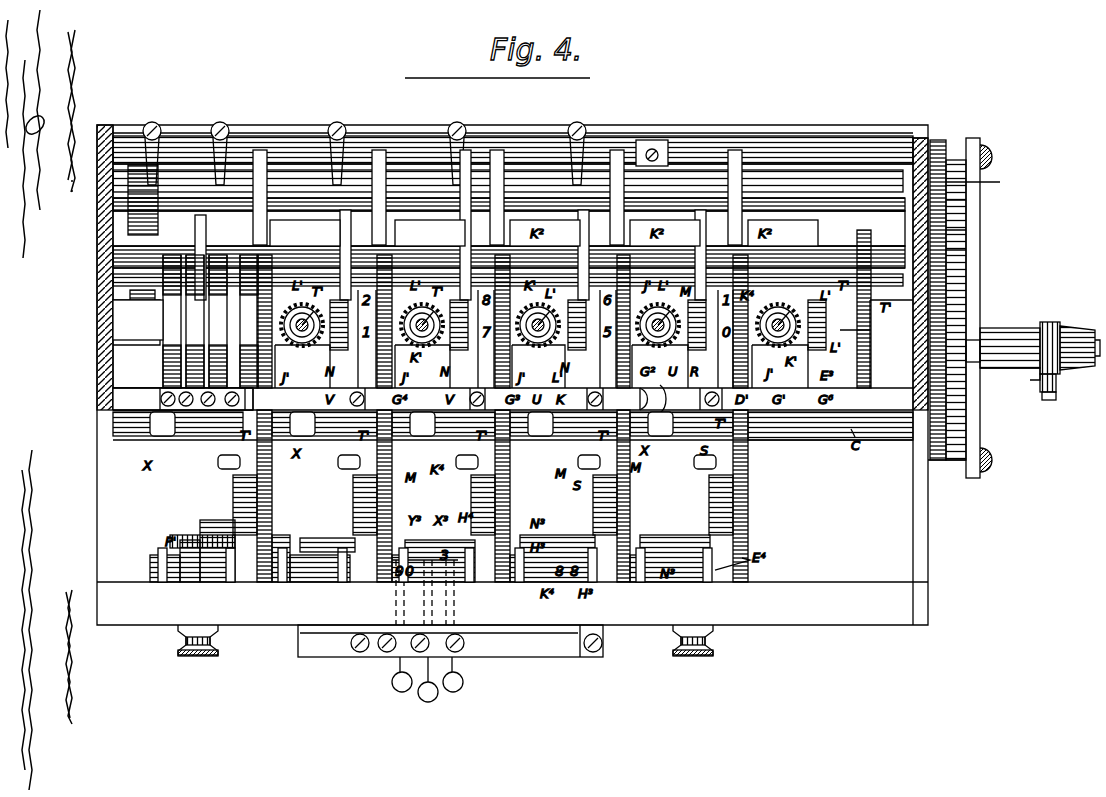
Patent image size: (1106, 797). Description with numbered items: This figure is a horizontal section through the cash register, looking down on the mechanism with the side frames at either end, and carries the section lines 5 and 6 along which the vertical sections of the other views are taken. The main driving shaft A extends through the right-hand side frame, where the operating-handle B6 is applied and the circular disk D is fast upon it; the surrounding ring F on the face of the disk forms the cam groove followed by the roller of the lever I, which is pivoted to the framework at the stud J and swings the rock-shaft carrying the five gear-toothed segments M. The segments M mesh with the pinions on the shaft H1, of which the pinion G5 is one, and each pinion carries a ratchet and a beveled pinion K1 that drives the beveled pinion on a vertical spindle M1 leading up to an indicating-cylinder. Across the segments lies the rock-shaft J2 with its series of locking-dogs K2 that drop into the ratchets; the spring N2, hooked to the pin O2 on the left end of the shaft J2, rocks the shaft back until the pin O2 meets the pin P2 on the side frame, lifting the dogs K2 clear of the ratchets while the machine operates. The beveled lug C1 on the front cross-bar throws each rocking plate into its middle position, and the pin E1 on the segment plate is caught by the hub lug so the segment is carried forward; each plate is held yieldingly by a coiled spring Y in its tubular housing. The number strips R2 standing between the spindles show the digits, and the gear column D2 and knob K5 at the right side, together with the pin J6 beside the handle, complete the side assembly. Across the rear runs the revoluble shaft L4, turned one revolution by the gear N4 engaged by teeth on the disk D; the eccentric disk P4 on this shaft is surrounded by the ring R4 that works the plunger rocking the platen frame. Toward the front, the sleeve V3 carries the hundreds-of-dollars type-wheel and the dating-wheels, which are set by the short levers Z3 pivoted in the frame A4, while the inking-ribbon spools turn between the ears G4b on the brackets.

The section line 5- 5 is at (112, 690).
The section line 6- 6 is at (800, 680).
The spring N2 is at (140, 135).
The pin P2 is at (113, 243).
The pin or screw O2 is at (113, 270).
The shaft H1 is at (139, 342).
The locking-dogs K2 is at (305, 233).
The ring R4 is at (430, 233).
The disk P4 is at (440, 191).
The revoluble shaft L4 is at (740, 198).
The rock-shaft J2 is at (851, 248).
The number strip R2 is at (210, 321).
The beveled pinion K1 is at (302, 336).
The pinion G5 is at (200, 399).
The vertical spindle M1 is at (272, 476).
The pin E1 is at (218, 460).
The beveled lug C1 is at (163, 579).
The ears G4b is at (202, 535).
The sleeve V3 is at (314, 548).
The frame A4 is at (536, 652).
The short keys or levers Z3 is at (392, 670).
The gear-toothed segments M is at (402, 626).
The circular disk D is at (428, 631).
The coiled spring Y is at (453, 626).
The lever I is at (980, 218).
The gear column D2 is at (950, 285).
The surrounding ring F is at (966, 252).
The stud J is at (990, 157).
The knob K5 is at (992, 458).
The gear N4 is at (982, 183).
The revoluble shaft A is at (985, 335).
The handle B6 is at (1072, 332).
The pin J6 is at (1052, 402).